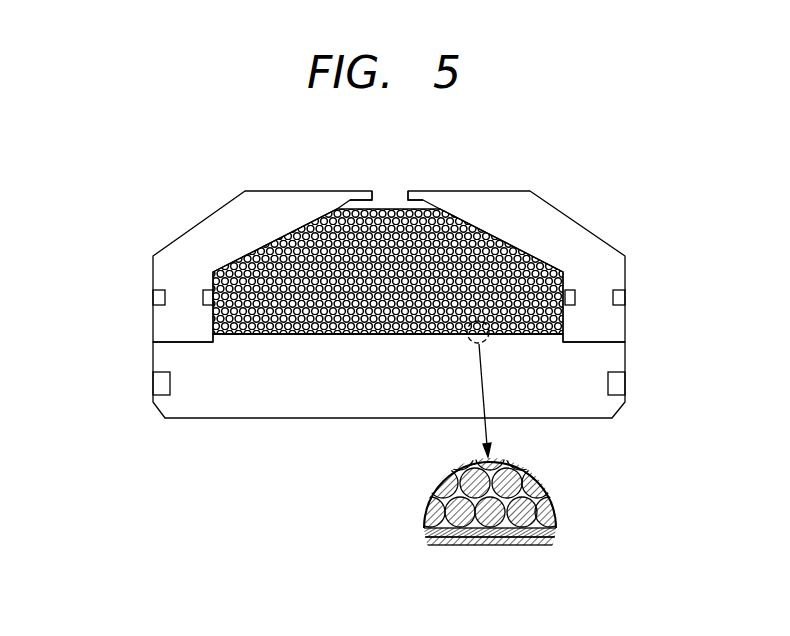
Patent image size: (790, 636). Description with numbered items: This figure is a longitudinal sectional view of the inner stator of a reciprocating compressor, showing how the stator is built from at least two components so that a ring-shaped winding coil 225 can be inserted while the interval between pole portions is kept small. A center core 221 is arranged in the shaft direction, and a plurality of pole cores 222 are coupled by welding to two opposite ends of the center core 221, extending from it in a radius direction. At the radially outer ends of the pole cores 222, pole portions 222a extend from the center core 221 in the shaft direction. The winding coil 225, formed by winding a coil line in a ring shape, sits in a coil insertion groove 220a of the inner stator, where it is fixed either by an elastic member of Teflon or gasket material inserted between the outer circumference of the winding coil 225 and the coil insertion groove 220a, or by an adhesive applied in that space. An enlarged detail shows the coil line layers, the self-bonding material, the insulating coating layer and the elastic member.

The coil insertion groove 220a is at (543, 336).
The center core 221 is at (415, 387).
The pole core 222 is at (160, 279).
The pole portion 222a is at (418, 197).
The winding coil 225 is at (328, 336).